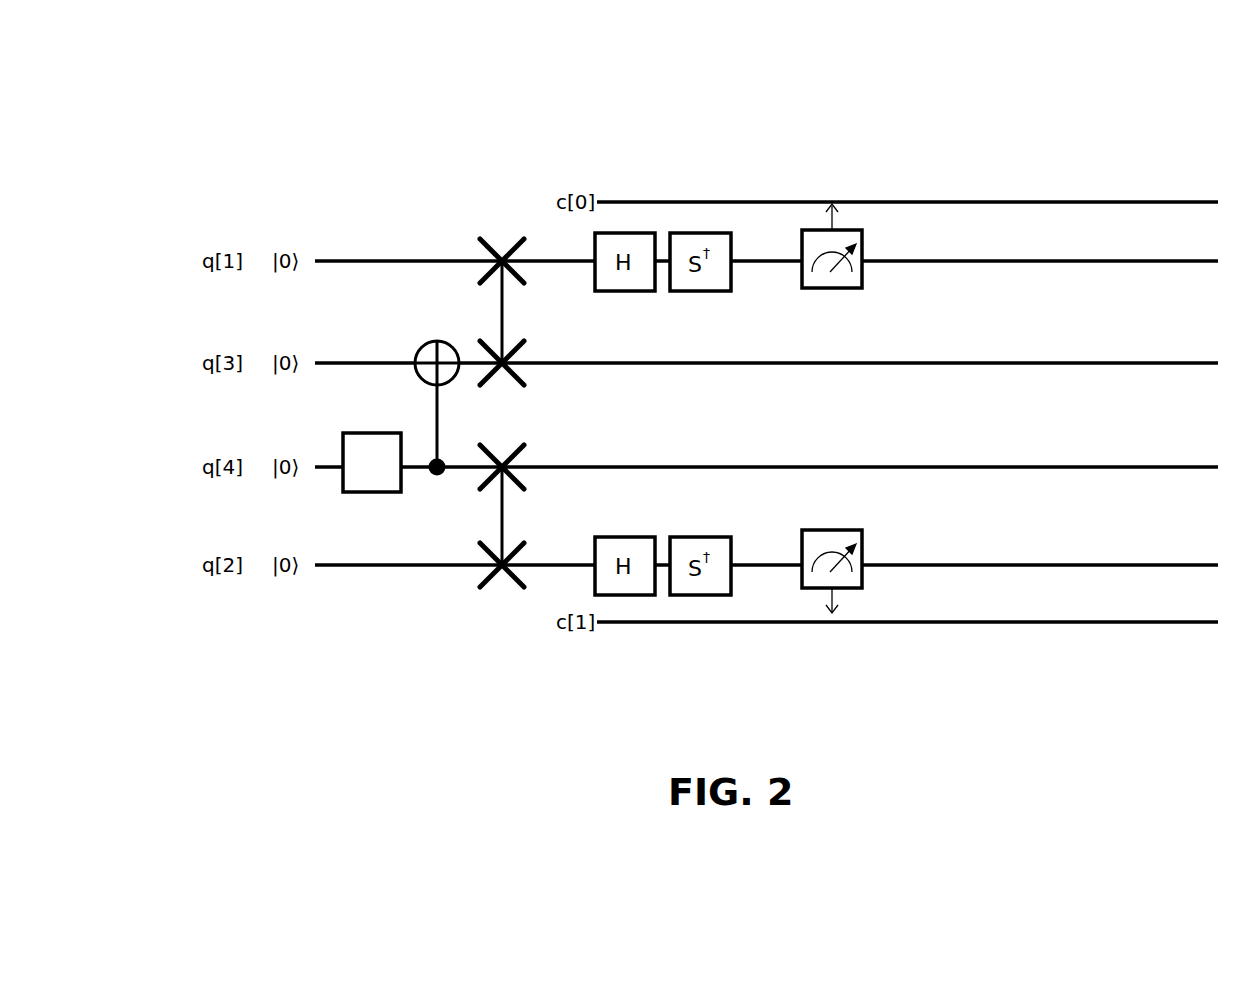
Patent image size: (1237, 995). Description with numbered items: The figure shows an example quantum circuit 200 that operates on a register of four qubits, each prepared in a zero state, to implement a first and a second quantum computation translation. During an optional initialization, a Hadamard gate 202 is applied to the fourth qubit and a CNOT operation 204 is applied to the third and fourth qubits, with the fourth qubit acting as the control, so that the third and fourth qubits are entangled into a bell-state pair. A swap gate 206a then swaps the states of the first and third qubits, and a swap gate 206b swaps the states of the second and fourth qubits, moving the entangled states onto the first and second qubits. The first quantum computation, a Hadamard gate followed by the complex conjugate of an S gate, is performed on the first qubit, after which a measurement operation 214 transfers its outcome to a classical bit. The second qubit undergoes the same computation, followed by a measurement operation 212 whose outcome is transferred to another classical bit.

The quantum circuit 200 is at (198, 74).
The Hadamard gate 202 is at (343, 452).
The CNOT operation 204 is at (430, 342).
The swap gate 206a is at (485, 240).
The swap gate 206b is at (485, 587).
The measurement operation 212 is at (862, 588).
The measurement operation 214 is at (862, 237).